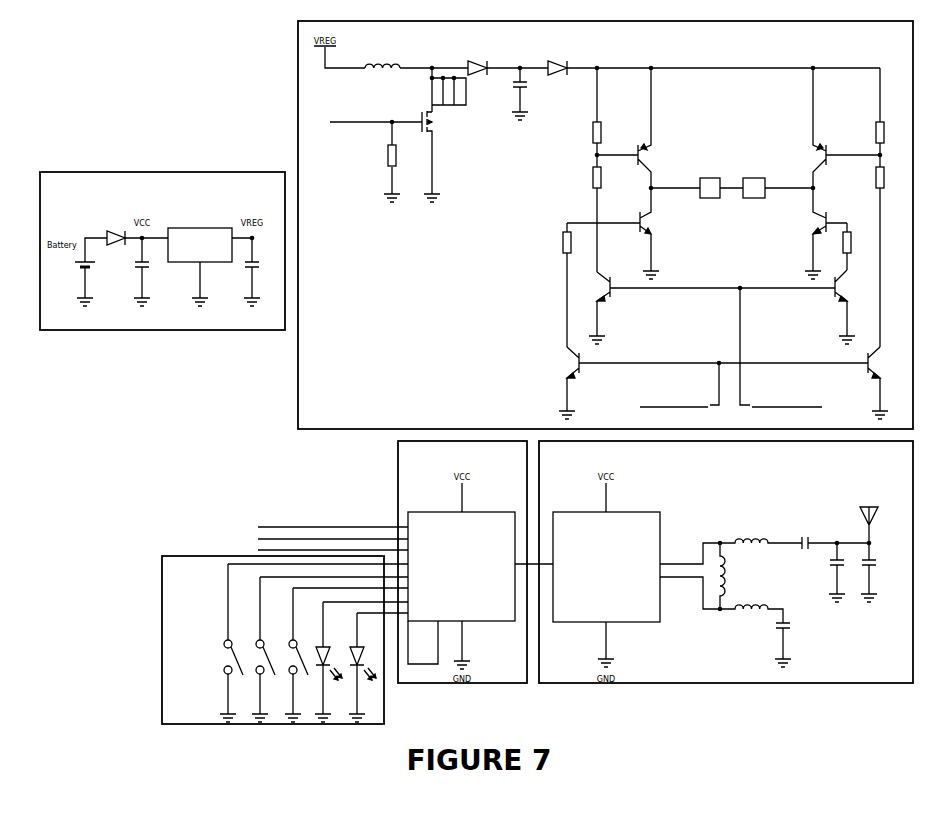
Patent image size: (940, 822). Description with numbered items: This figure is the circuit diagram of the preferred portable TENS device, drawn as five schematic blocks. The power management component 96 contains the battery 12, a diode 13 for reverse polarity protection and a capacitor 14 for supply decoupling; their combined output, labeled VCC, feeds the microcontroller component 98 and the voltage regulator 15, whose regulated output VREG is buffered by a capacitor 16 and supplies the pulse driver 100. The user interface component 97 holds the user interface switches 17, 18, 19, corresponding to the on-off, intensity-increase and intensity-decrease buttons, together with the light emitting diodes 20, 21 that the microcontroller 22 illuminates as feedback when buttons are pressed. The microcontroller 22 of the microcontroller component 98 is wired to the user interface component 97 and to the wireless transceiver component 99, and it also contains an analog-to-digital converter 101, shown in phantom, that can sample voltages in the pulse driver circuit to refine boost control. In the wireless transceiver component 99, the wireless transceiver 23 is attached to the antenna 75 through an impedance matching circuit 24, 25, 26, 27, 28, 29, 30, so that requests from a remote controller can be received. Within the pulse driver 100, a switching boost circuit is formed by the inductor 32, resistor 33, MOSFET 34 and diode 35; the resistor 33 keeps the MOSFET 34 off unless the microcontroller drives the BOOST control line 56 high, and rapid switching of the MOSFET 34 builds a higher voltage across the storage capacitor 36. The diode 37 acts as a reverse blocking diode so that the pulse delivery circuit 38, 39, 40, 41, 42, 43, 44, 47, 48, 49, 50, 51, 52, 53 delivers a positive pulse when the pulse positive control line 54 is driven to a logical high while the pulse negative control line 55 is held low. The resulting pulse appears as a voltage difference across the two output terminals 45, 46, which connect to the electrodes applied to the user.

The battery 12 is at (79, 278).
The diode 13 is at (116, 231).
The capacitor 14 is at (149, 272).
The voltage regulator 15 is at (200, 260).
The capacitor 16 is at (259, 272).
The user interface switch 17 is at (306, 643).
The user interface switch 18 is at (323, 649).
The user interface switch 19 is at (339, 655).
The light emitting diode 20 is at (354, 662).
The light emitting diode 21 is at (371, 667).
The microcontroller 22 is at (461, 560).
The wireless transceiver 23 is at (606, 561).
The impedance matching circuit element 24 is at (729, 576).
The impedance matching circuit element 25 is at (761, 534).
The impedance matching circuit element 26 is at (751, 616).
The impedance matching circuit element 27 is at (789, 645).
The impedance matching circuit element 28 is at (835, 537).
The impedance matching circuit element 29 is at (843, 572).
The impedance matching circuit element 30 is at (875, 572).
The inductor 32 is at (382, 59).
The resistor 33 is at (399, 162).
The MOSFET 34 is at (425, 156).
The diode 35 is at (477, 62).
The storage capacitor 36 is at (526, 94).
The diode 37 is at (557, 62).
The pulse delivery circuit element 38 is at (589, 132).
The pulse delivery circuit element 39 is at (589, 177).
The pulse delivery circuit element 40 is at (633, 128).
The pulse delivery circuit element 41 is at (618, 233).
The pulse delivery circuit element 42 is at (559, 285).
The pulse delivery circuit element 43 is at (711, 308).
The pulse delivery circuit element 44 is at (709, 383).
The output terminal 45 is at (710, 213).
The output terminal 46 is at (754, 215).
The pulse delivery circuit element 47 is at (837, 128).
The pulse delivery circuit element 48 is at (888, 132).
The pulse delivery circuit element 49 is at (888, 177).
The pulse delivery circuit element 50 is at (826, 233).
The pulse delivery circuit element 51 is at (855, 246).
The pulse delivery circuit element 52 is at (849, 307).
The pulse delivery circuit element 53 is at (882, 383).
The pulse positive control line 54 is at (488, 451).
The pulse negative control line 55 is at (540, 407).
The BOOST control line 56 is at (333, 324).
The antenna 75 is at (883, 525).
The power management component 96 is at (163, 330).
The user interface component 97 is at (270, 724).
The microcontroller component 98 is at (480, 683).
The wireless transceiver component 99 is at (727, 683).
The pulse driver 100 is at (320, 430).
The analog-to-digital converter 101 is at (410, 664).